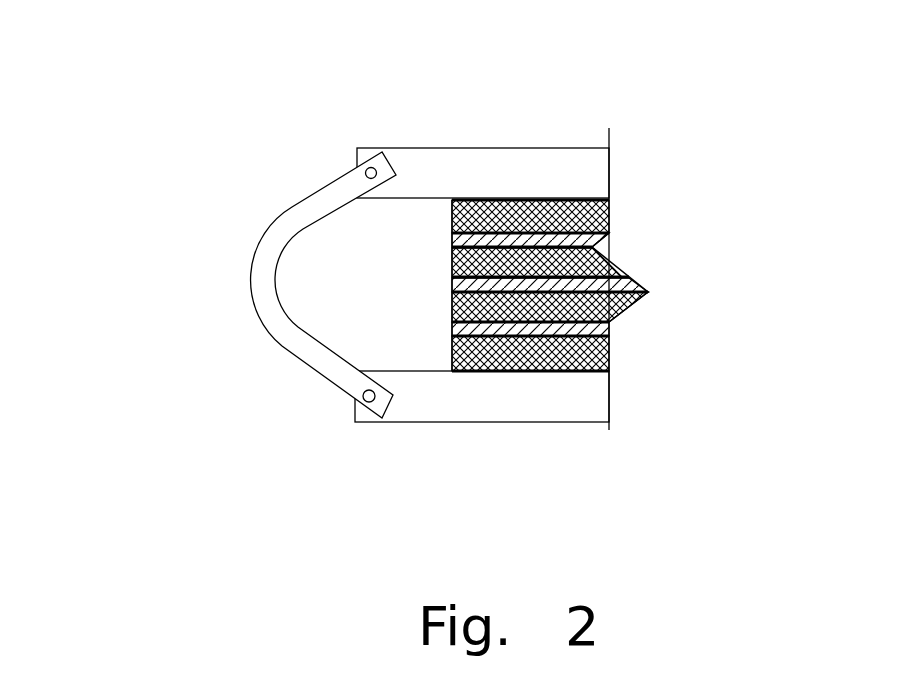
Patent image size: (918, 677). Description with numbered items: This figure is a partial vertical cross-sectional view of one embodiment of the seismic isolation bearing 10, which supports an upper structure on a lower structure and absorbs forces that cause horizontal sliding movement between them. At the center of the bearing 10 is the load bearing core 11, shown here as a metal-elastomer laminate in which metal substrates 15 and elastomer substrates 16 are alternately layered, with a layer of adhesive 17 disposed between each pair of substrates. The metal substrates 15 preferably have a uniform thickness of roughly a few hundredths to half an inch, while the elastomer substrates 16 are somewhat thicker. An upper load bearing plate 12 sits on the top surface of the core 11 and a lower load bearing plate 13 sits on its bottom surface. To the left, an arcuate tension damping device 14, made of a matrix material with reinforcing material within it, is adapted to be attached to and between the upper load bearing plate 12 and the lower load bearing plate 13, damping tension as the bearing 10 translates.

The seismic isolation bearing 10 is at (620, 155).
The load bearing core 11 is at (622, 260).
The upper load bearing plate 12 is at (467, 158).
The lower load bearing plate 13 is at (580, 398).
The tension damping device 14 is at (297, 348).
The metal substrate 15 is at (462, 238).
The elastomer substrate 16 is at (452, 263).
The layer of adhesive 17 is at (455, 247).